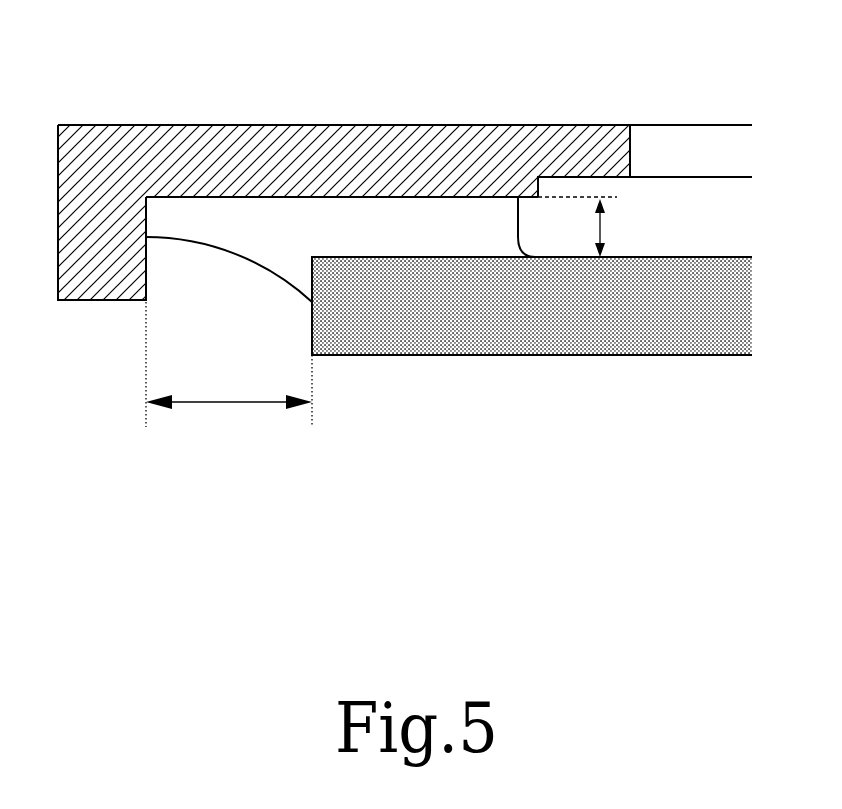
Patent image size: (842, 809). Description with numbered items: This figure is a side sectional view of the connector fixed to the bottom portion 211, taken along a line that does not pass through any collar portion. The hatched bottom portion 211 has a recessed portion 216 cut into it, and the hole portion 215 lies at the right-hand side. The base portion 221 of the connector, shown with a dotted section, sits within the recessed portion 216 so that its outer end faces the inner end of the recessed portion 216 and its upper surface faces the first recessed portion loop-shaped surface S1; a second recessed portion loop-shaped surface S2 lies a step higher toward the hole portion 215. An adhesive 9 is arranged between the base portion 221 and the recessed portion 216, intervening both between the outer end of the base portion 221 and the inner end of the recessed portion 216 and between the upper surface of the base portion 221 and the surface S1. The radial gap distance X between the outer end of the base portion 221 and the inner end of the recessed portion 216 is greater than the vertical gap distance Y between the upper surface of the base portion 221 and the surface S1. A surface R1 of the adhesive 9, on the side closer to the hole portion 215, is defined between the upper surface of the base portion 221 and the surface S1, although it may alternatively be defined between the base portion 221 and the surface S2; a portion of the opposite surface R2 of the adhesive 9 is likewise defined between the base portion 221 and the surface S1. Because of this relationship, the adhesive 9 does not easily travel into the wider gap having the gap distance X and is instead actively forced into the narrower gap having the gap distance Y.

The bottom portion 211 is at (140, 125).
The hole portion 215 is at (631, 146).
The recessed portion 216 is at (147, 322).
The base portion 221 is at (677, 356).
The adhesive 9 is at (277, 276).
The surface of the adhesive R1 is at (523, 242).
The surface of the adhesive R2 is at (164, 272).
The first recessed portion loop-shaped surface S1 is at (312, 197).
The second recessed portion loop-shaped surface S2 is at (623, 178).
The gap distance X is at (229, 371).
The gap distance Y is at (615, 228).